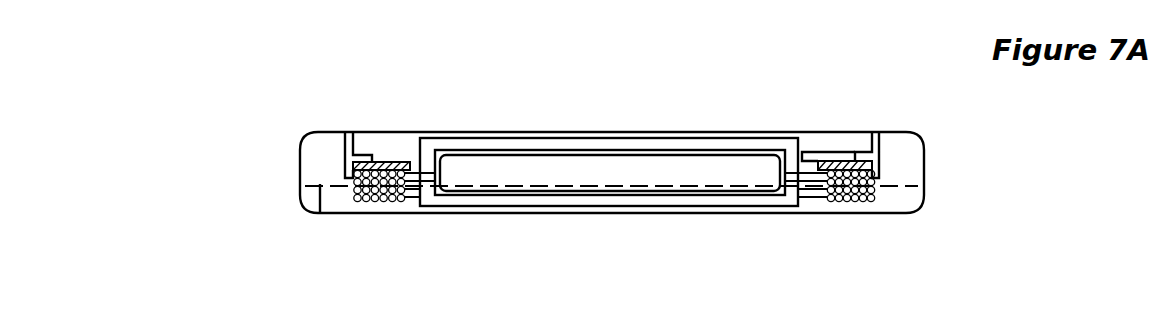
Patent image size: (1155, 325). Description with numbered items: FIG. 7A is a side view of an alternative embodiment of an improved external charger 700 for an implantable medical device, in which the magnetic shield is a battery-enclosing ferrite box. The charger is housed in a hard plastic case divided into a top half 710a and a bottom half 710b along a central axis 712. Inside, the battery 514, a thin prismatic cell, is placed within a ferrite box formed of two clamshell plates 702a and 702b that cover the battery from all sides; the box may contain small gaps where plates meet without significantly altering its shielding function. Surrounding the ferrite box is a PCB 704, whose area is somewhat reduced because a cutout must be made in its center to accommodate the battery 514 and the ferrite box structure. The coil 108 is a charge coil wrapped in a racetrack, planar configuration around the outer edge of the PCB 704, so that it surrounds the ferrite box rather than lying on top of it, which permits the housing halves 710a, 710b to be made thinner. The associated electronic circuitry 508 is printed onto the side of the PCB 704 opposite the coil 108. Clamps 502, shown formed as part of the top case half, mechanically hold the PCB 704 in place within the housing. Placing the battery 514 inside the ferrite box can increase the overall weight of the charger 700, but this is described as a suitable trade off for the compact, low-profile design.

The external charger 700 is at (272, 136).
The top half of housing 710a is at (925, 148).
The bottom half of housing 710b is at (925, 198).
The central axis 712 is at (320, 213).
The clamps 502 is at (345, 152).
The PCB 704 is at (393, 161).
The electronic circuitry 508 is at (813, 153).
The coil 108 is at (366, 200).
The clamshell plate 702a is at (757, 145).
The clamshell plate 702b is at (760, 200).
The battery 514 is at (668, 183).